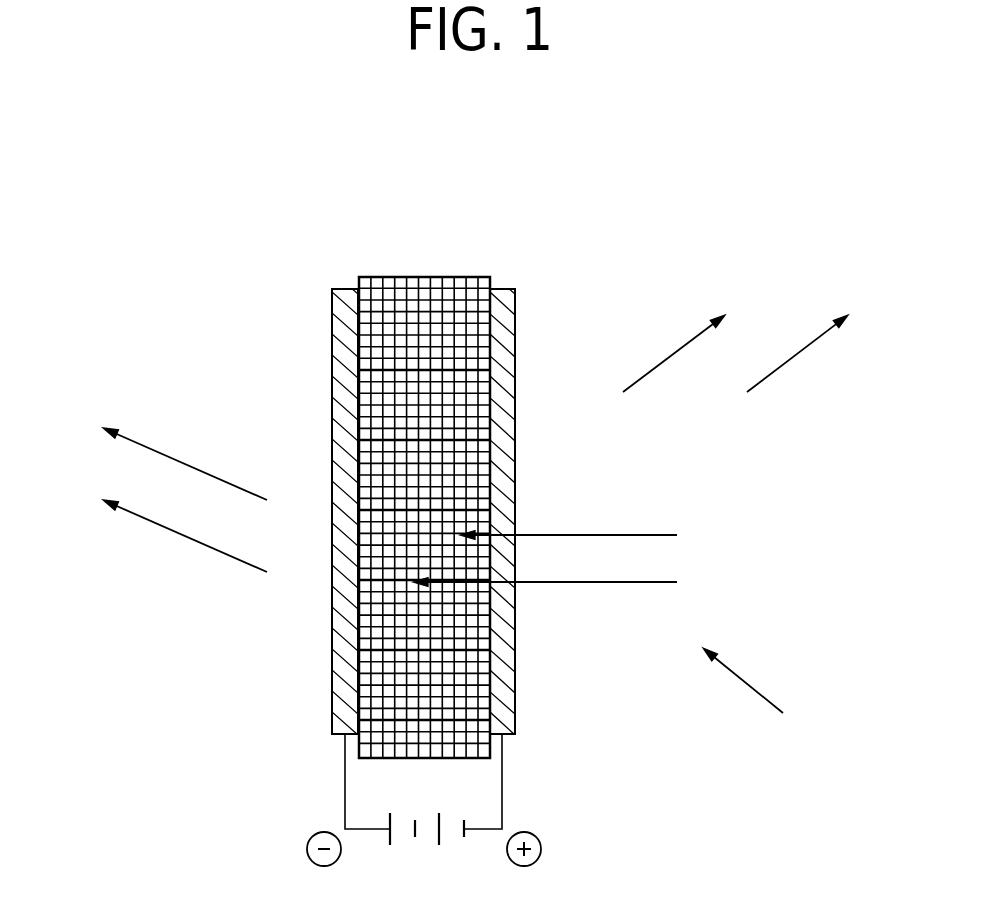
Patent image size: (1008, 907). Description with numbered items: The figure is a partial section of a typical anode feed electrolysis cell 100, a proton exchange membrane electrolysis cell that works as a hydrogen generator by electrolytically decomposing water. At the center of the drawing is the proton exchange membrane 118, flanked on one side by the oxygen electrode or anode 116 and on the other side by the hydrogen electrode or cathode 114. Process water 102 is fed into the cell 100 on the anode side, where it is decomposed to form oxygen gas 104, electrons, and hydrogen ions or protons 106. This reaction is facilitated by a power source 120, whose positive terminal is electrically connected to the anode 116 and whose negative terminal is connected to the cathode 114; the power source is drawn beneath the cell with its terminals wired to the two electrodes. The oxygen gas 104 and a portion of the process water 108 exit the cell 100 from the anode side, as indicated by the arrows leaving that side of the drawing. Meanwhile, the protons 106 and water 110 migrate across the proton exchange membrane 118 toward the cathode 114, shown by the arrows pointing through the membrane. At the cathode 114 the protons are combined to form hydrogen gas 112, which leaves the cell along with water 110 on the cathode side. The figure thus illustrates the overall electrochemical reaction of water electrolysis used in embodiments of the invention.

The anode feed electrolysis cell 100 is at (456, 255).
The process water 102 is at (760, 695).
The oxygen gas 104 is at (692, 340).
The hydrogen ions (protons) 106 is at (591, 519).
The portion of the process water 108 is at (815, 346).
The water 110 is at (392, 555).
The hydrogen gas 112 is at (164, 450).
The hydrogen electrode (cathode) 114 is at (350, 288).
The oxygen electrode (anode) 116 is at (500, 288).
The proton exchange membrane 118 is at (415, 277).
The power source 120 is at (535, 776).